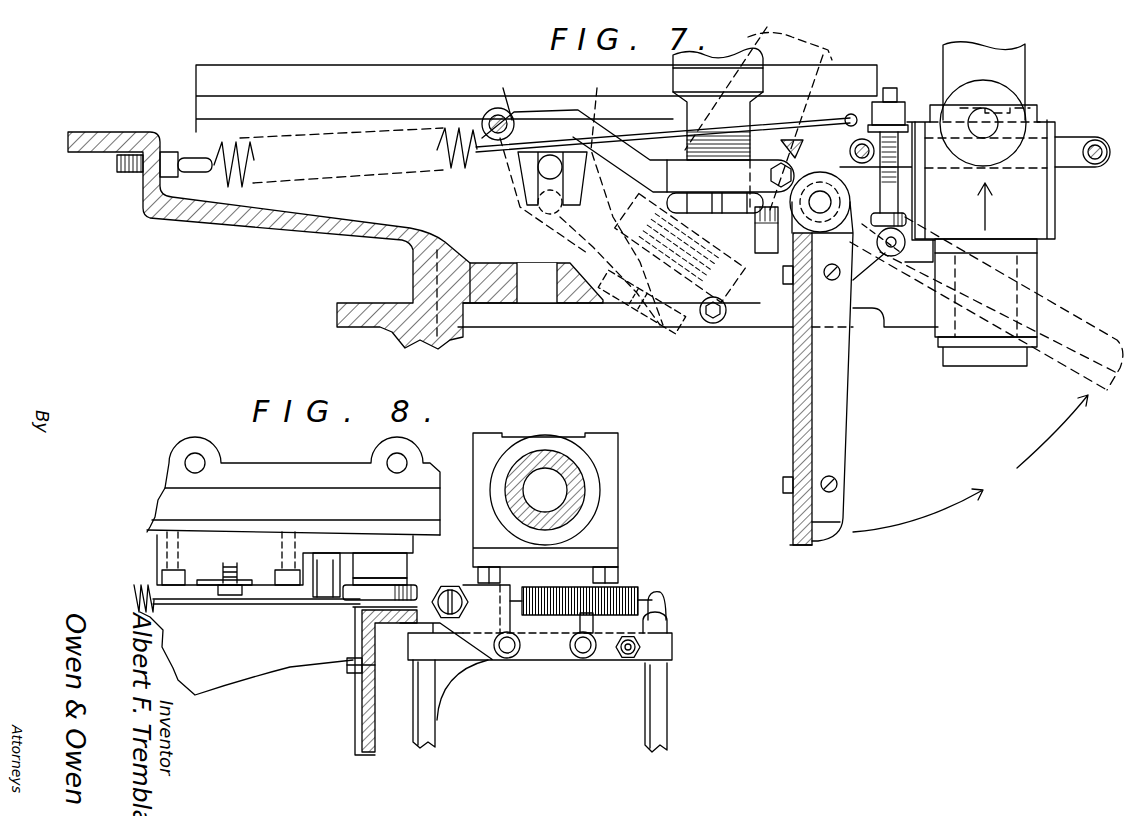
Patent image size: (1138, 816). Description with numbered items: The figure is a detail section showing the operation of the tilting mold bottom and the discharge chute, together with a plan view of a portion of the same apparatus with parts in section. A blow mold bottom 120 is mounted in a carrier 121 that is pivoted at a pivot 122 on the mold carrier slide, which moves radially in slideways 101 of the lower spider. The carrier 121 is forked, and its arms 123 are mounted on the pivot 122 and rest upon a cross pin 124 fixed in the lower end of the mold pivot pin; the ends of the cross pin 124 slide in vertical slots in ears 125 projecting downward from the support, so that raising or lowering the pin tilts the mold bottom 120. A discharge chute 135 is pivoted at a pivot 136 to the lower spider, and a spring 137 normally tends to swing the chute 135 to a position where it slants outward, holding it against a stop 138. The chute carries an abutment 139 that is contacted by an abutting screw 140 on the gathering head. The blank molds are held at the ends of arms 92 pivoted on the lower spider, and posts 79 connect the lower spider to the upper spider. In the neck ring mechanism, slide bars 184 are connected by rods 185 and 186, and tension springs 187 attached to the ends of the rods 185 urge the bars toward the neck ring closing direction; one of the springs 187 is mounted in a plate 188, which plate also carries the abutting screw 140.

In FIG. 7, the slideways 101 is at (210, 105).
In FIG. 7, the pivot 122 is at (518, 108).
In FIG. 7, the blow mold bottom 120 is at (673, 78).
In FIG. 7, the spring 137 is at (450, 172).
In FIG. 8, the spring 137 is at (155, 612).
In FIG. 7, the cross pin 124 is at (538, 167).
In FIG. 7, the arms 123 is at (607, 165).
In FIG. 7, the carrier 121 is at (657, 190).
In FIG. 7, the ears 125 is at (528, 205).
In FIG. 7, the stop 138 is at (772, 262).
In FIG. 7, the pivot 136 is at (818, 212).
In FIG. 8, the pivot 136 is at (388, 567).
In FIG. 7, the abutment 139 is at (886, 257).
In FIG. 7, the abutting screw 140 is at (895, 195).
In FIG. 8, the abutting screw 140 is at (463, 595).
In FIG. 7, the discharge chute 135 is at (810, 543).
In FIG. 8, the discharge chute 135 is at (363, 721).
In FIG. 8, the arms 92 is at (263, 662).
In FIG. 8, the posts 79 is at (580, 492).
In FIG. 8, the tension springs 187 is at (633, 590).
In FIG. 8, the plate 188 is at (485, 625).
In FIG. 8, the slide bars 184 is at (628, 660).
In FIG. 8, the rods 185 is at (657, 705).
In FIG. 8, the rods 186 is at (425, 733).